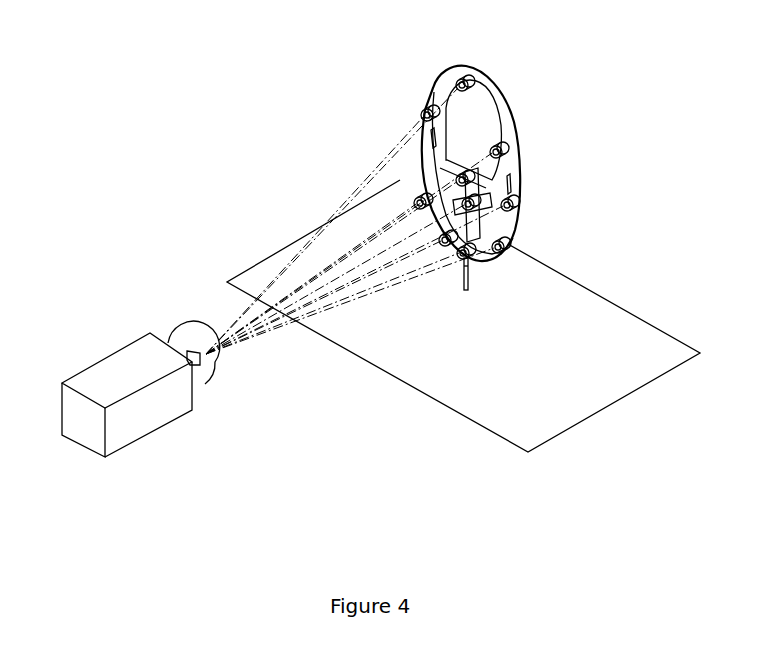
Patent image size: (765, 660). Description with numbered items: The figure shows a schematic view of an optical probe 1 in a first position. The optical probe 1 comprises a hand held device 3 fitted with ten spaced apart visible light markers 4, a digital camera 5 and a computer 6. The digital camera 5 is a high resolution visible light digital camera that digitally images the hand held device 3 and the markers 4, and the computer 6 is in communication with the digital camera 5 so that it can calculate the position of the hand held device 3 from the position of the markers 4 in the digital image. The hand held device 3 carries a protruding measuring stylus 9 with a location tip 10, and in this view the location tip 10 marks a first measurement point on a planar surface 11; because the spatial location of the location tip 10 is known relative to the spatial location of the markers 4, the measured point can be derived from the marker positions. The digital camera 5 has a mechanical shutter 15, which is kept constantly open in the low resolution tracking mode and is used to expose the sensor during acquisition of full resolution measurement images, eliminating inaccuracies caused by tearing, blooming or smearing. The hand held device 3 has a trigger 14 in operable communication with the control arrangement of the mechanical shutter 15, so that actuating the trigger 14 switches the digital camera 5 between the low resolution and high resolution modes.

The optical probe 1 is at (122, 55).
The hand held device 3 is at (500, 102).
The markers 4 is at (468, 83).
The digital camera 5 is at (186, 335).
The computer 6 is at (85, 432).
The measuring stylus 9 is at (469, 272).
The location tip 10 is at (466, 291).
The planar surface 11 is at (598, 338).
The trigger 14 is at (494, 182).
The mechanical shutter 15 is at (200, 357).